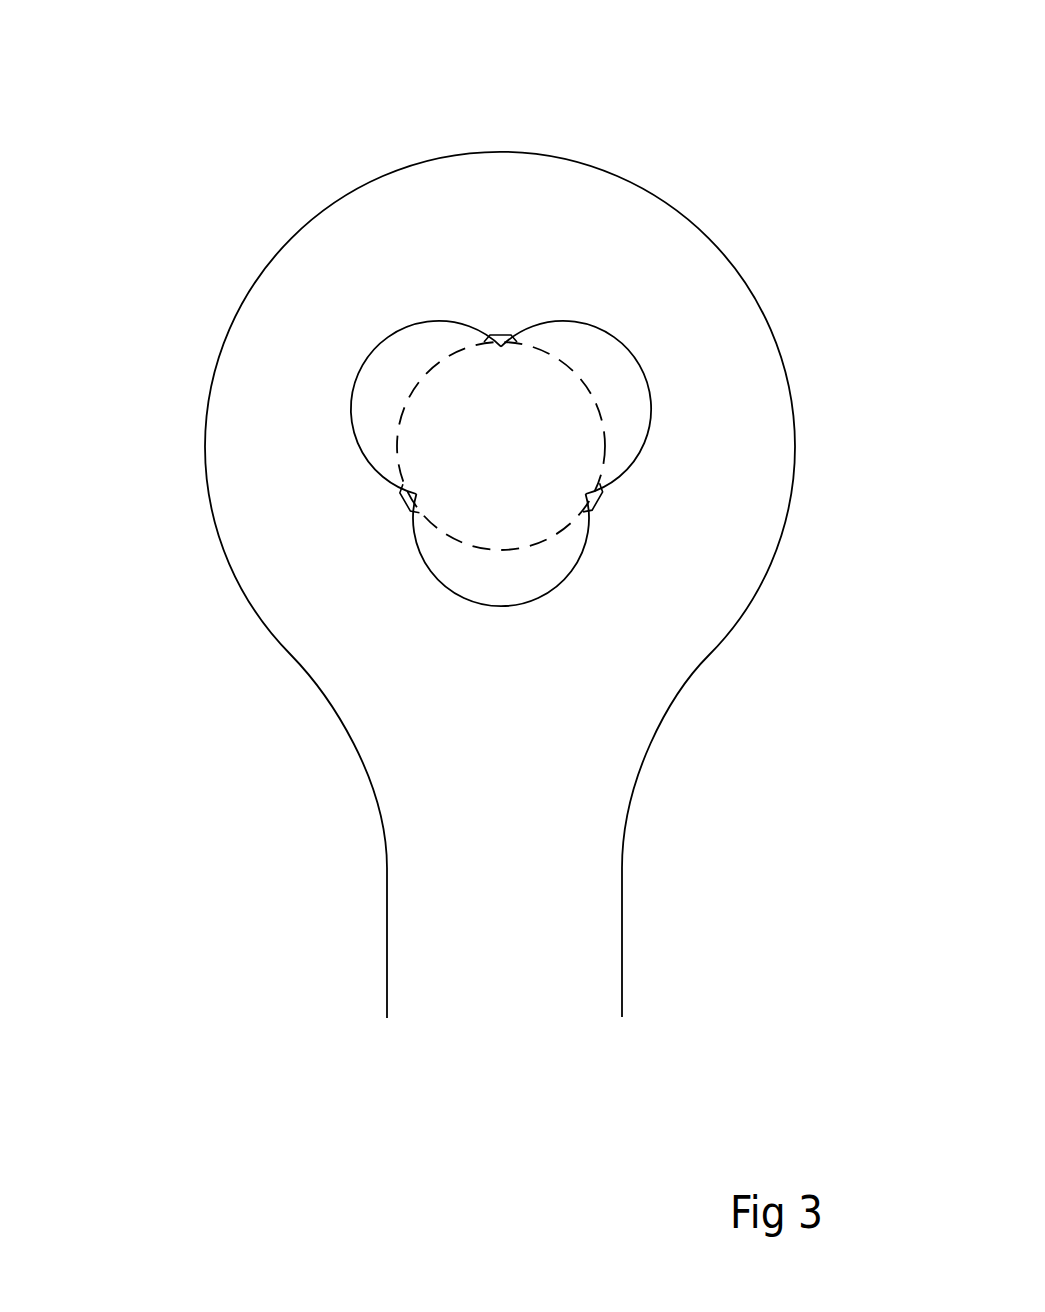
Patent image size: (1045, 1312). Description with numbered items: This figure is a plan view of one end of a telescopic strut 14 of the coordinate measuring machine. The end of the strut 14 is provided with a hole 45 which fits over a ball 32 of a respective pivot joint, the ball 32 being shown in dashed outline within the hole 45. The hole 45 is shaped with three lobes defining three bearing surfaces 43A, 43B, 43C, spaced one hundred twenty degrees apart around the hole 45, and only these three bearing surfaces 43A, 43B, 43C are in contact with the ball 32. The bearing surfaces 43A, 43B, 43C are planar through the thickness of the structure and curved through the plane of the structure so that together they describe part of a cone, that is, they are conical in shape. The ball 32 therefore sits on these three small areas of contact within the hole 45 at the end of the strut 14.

The telescopic strut 14 is at (475, 960).
The ball 32 is at (597, 397).
The hole 45 is at (393, 379).
The bearing surface 43A is at (392, 504).
The bearing surface 43B is at (495, 322).
The bearing surface 43C is at (607, 505).